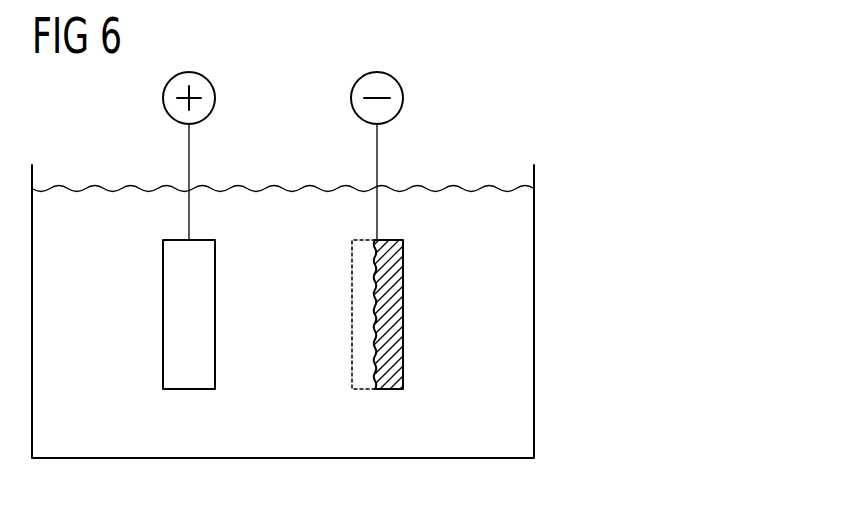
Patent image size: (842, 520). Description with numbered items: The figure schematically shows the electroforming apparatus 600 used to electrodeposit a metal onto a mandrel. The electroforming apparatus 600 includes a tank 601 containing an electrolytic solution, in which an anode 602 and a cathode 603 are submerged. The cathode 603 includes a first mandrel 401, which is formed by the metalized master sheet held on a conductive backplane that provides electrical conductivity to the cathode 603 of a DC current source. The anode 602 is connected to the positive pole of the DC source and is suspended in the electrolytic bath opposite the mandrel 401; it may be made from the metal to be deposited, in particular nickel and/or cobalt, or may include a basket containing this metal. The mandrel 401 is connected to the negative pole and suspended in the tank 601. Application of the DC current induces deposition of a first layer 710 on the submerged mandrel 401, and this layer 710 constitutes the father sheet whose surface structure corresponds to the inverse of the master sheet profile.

The electroforming apparatus 600 is at (520, 102).
The tank 601 is at (534, 312).
The anode 602 is at (190, 151).
The cathode 603 is at (378, 151).
The first mandrel 401 is at (395, 363).
The first layer 710 is at (366, 378).